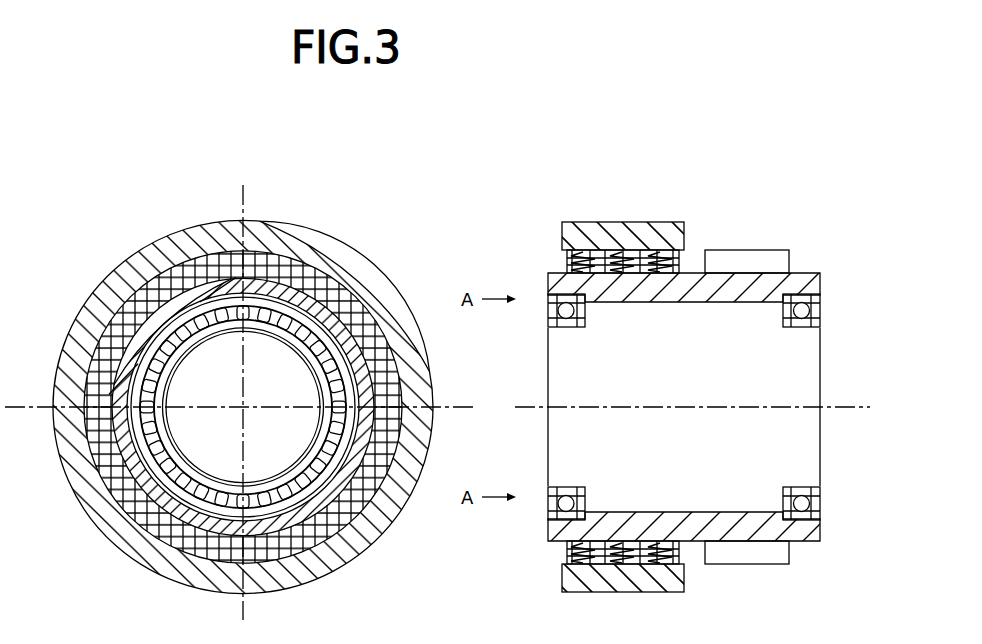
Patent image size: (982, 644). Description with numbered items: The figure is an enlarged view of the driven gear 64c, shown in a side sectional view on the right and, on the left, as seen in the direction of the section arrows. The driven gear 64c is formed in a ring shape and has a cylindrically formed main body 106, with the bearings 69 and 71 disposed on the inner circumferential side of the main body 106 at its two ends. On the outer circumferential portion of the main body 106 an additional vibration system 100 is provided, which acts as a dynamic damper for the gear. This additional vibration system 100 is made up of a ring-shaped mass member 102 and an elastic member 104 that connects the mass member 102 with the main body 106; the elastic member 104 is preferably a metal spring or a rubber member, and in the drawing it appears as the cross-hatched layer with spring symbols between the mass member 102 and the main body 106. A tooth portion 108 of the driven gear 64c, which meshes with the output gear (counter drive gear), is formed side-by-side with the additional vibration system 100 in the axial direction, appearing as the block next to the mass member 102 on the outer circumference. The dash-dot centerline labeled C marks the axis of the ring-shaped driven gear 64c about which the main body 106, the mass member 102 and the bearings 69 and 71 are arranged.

The driven gear 64c is at (803, 156).
The additional vibration system 100 is at (541, 205).
The mass member 102 is at (283, 237).
The elastic member 104 is at (182, 272).
The main body 106 is at (165, 515).
The tooth portion 108 is at (780, 262).
The bearing 69 is at (565, 314).
The bearing 71 is at (803, 315).
The rotation axis C is at (247, 413).